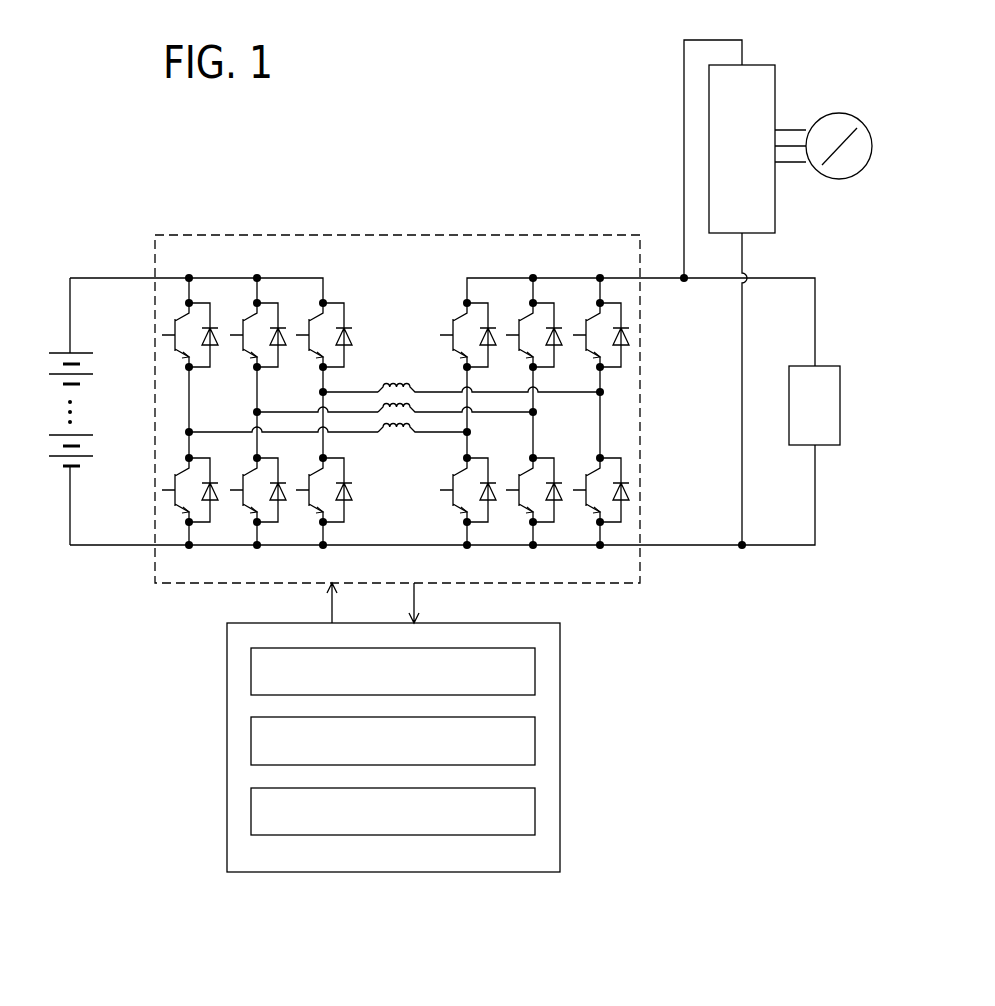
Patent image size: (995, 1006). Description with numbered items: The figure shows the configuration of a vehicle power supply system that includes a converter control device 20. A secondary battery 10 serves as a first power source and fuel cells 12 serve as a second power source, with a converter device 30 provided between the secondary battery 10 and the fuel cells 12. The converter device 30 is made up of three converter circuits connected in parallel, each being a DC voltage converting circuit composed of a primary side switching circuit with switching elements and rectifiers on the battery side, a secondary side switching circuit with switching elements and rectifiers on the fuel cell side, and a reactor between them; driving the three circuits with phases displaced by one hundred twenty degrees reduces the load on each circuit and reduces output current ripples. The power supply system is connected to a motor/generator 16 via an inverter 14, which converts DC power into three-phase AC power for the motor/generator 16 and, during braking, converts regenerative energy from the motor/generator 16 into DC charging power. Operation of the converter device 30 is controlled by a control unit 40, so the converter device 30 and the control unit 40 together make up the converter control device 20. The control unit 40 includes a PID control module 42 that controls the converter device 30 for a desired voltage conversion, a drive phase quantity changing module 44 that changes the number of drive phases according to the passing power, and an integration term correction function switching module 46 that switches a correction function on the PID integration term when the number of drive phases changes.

The secondary battery 10 is at (59, 412).
The fuel cells 12 is at (828, 447).
The inverter 14 is at (777, 75).
The motor/generator 16 is at (848, 180).
The converter control device 20 is at (137, 666).
The converter device 30 is at (155, 563).
The control unit 40 is at (227, 770).
The PID control module 42 is at (535, 671).
The drive phase quantity changing module 44 is at (535, 740).
The integration term correction function switching module 46 is at (535, 810).